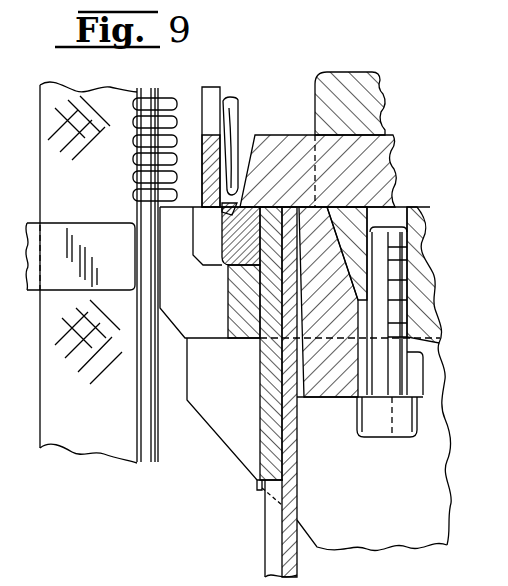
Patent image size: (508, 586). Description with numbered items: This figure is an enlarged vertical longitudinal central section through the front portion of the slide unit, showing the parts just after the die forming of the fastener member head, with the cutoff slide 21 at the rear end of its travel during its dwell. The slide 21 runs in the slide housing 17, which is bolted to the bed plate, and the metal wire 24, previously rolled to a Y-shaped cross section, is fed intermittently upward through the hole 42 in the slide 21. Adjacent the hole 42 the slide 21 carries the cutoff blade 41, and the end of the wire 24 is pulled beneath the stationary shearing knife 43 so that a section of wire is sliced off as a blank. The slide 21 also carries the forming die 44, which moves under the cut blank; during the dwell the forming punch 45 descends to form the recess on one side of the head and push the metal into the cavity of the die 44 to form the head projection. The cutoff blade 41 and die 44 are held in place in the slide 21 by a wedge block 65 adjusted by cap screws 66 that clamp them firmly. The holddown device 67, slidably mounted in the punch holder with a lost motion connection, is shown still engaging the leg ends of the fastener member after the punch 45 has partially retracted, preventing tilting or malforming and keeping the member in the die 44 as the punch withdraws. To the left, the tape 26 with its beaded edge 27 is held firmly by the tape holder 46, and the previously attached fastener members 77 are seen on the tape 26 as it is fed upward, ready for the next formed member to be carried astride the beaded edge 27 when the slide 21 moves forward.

The slide housing 17 is at (347, 72).
The cutoff slide 21 is at (437, 313).
The metal wire 24 is at (263, 533).
The tape 26 is at (110, 457).
The beaded edge 27 is at (160, 453).
The cutoff blade 41 is at (257, 482).
The hole 42 is at (302, 390).
The stationary shearing knife 43 is at (261, 133).
The forming die 44 is at (203, 270).
The forming punch 45 is at (238, 110).
The tape holder 46 is at (100, 290).
The wedge block 65 is at (342, 397).
The cap screws 66 is at (382, 437).
The holddown device 67 is at (200, 110).
The fastener members 77 is at (135, 172).